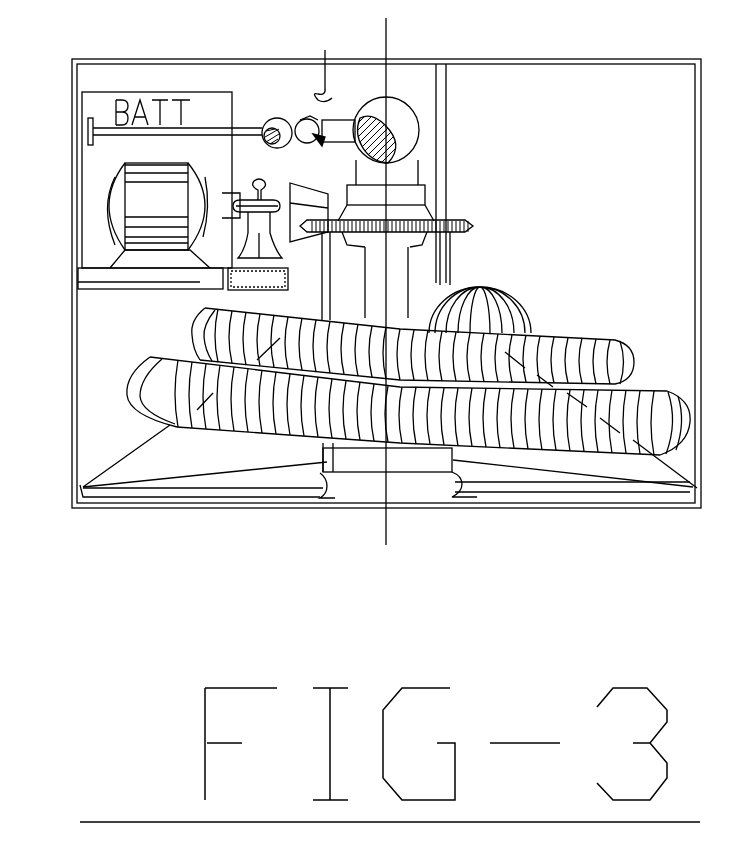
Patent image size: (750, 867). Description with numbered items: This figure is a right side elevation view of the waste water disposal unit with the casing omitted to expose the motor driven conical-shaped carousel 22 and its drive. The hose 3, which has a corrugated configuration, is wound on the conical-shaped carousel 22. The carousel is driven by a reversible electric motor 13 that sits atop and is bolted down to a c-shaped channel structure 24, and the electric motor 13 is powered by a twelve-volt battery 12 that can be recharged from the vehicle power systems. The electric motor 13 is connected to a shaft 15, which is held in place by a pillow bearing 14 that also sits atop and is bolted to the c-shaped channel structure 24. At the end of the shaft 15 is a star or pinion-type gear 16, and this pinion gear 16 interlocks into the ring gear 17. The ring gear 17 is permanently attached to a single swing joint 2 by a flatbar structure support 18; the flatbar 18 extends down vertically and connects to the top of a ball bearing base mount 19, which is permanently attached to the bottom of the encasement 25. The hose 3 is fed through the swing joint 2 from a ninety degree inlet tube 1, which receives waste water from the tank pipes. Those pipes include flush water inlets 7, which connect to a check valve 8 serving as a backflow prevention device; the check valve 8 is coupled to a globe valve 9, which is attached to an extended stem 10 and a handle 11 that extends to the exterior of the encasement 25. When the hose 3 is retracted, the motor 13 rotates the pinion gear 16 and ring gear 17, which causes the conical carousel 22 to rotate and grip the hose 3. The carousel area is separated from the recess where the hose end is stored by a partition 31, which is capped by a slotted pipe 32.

The 90 degree inlet tube 1 is at (418, 157).
The swing joint 2 is at (427, 198).
The hose 3 is at (402, 117).
The flush water inlets 7 is at (345, 120).
The check valve 8 is at (318, 135).
The globe valve 9 is at (270, 123).
The extended stem 10 is at (216, 129).
The handle 11 is at (90, 125).
The battery 12 is at (112, 92).
The reversible electric motor 13 is at (97, 205).
The pillow bearing 14 is at (256, 179).
The shaft 15 is at (266, 199).
The pinion gear 16 is at (308, 188).
The ring gear 17 is at (471, 227).
The flatbar structure support 18 is at (453, 268).
The ball bearing base mount 19 is at (477, 482).
The conical-shaped carousel 22 is at (125, 455).
The c-shaped channel structure 24 is at (123, 288).
The encasement 25 is at (610, 59).
The partition 31 is at (350, 281).
The slotted pipe 32 is at (447, 112).